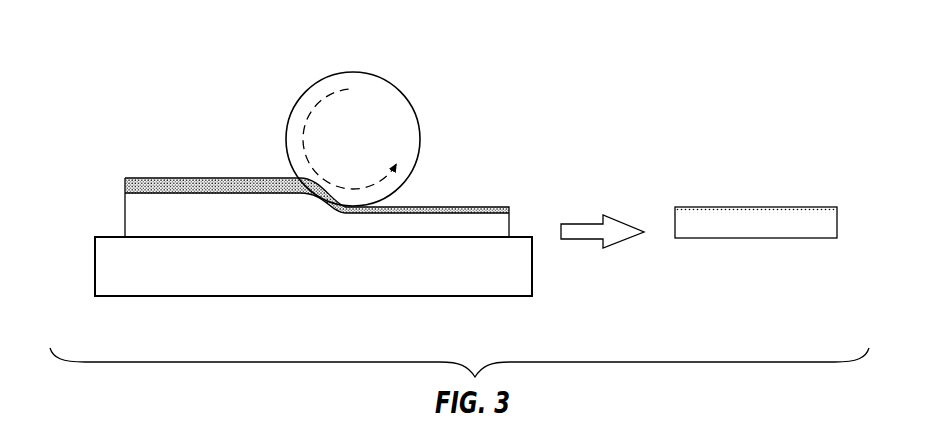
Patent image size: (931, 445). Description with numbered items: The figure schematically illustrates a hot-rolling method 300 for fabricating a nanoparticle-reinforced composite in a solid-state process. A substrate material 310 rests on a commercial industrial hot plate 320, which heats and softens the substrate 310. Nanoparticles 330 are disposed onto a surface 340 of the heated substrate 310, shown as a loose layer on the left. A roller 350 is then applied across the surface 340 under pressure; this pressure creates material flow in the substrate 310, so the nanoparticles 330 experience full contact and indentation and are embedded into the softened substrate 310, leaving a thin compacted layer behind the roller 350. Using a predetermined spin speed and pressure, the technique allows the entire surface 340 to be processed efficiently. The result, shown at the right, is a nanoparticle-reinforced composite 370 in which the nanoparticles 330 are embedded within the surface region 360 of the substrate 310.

The hot-rolling method 300 is at (136, 44).
The substrate material 310 is at (130, 217).
The industrial hot plate 320 is at (198, 284).
The nanoparticles 330 is at (165, 178).
The surface 340 is at (209, 195).
The roller 350 is at (363, 73).
The surface region 360 is at (845, 206).
The nanoparticle-reinforced composite 370 is at (800, 130).